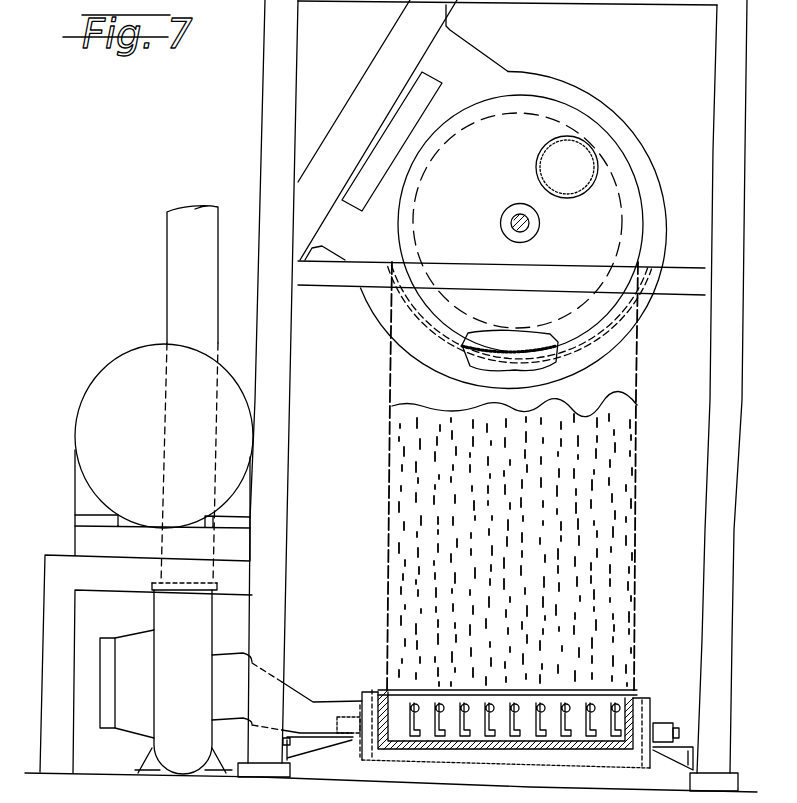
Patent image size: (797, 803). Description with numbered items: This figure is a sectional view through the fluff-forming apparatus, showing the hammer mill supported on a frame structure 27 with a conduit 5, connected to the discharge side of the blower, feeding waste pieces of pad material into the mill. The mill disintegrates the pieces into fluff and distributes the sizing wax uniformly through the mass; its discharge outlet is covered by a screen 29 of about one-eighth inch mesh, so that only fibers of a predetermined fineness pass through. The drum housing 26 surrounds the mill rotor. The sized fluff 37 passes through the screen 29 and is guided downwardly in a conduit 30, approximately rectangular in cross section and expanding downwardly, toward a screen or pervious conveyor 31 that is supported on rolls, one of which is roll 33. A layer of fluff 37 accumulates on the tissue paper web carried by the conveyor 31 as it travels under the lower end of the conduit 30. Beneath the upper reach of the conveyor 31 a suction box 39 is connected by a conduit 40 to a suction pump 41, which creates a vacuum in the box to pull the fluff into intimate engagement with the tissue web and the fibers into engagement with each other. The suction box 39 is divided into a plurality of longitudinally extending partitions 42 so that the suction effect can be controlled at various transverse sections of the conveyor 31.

The frame structure 27 is at (268, 137).
The drum 26 is at (603, 103).
The conduit 5 is at (588, 195).
The screen 29 is at (517, 357).
The conduit 30 is at (386, 443).
The fluff 37 is at (412, 516).
The suction box 39 is at (507, 745).
The partitions 42 is at (505, 703).
The pervious conveyor 31 is at (640, 693).
The roll 33 is at (656, 708).
The conduit 40 is at (330, 707).
The suction pump 41 is at (163, 614).